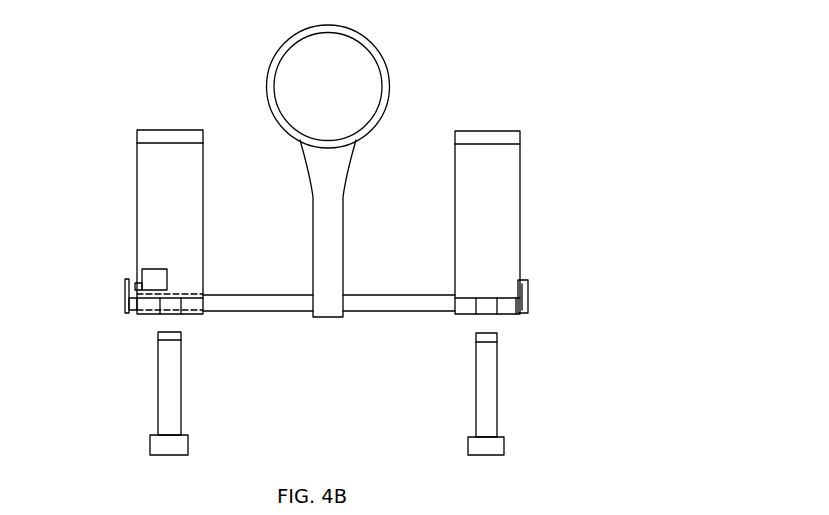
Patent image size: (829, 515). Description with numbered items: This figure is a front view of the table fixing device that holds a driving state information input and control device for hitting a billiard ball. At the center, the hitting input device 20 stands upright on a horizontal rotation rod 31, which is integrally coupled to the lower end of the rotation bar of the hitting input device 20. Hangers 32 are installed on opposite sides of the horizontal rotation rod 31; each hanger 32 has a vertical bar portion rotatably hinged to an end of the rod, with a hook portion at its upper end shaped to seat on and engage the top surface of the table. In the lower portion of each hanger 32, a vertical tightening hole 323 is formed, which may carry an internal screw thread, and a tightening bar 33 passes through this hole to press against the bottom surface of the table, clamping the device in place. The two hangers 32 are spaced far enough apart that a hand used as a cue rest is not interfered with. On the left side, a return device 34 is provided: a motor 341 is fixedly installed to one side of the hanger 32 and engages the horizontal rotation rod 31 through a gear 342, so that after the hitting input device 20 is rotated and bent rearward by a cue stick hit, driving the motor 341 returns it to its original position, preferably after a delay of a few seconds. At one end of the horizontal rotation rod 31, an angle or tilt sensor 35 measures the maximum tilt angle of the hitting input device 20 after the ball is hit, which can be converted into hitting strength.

The hitting input device 20 is at (374, 42).
The horizontal rotation rod 31 is at (242, 309).
The hanger 32 is at (155, 130).
The vertical tightening hole 323 is at (477, 310).
The tightening bar 33 is at (480, 378).
The return device 34 is at (100, 249).
The motor 341 is at (148, 270).
The gear 342 is at (125, 284).
The tilt sensor 35 is at (533, 288).